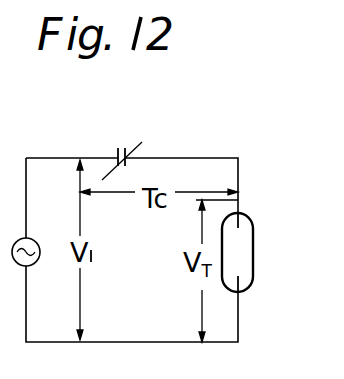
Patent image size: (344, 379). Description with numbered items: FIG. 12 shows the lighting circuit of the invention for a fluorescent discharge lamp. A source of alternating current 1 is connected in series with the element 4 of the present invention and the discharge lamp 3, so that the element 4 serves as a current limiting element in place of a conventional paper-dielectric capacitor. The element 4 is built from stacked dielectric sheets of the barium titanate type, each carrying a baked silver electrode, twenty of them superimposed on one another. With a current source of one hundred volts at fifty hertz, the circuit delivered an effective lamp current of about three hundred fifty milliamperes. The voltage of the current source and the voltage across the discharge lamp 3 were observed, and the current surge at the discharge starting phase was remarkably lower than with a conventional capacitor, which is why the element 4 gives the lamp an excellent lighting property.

The source of alternating current 1 is at (36, 240).
The discharge lamp 3 is at (253, 232).
The element 4 is at (128, 160).